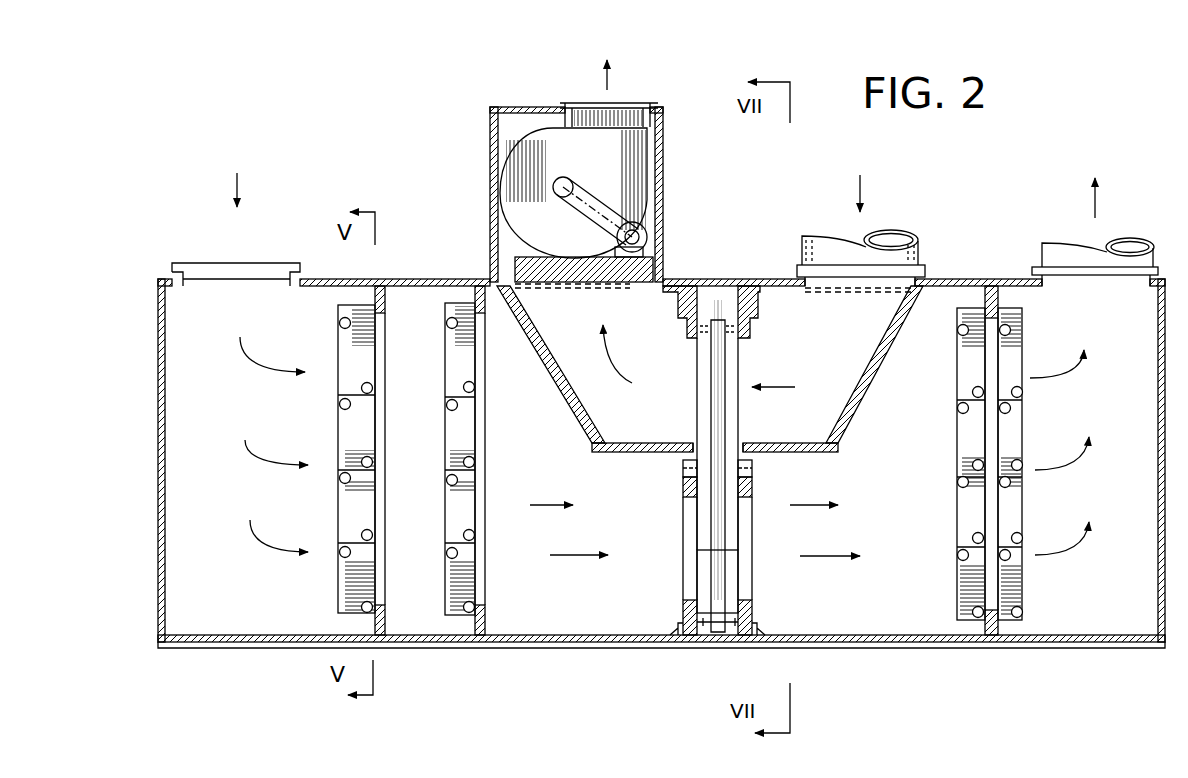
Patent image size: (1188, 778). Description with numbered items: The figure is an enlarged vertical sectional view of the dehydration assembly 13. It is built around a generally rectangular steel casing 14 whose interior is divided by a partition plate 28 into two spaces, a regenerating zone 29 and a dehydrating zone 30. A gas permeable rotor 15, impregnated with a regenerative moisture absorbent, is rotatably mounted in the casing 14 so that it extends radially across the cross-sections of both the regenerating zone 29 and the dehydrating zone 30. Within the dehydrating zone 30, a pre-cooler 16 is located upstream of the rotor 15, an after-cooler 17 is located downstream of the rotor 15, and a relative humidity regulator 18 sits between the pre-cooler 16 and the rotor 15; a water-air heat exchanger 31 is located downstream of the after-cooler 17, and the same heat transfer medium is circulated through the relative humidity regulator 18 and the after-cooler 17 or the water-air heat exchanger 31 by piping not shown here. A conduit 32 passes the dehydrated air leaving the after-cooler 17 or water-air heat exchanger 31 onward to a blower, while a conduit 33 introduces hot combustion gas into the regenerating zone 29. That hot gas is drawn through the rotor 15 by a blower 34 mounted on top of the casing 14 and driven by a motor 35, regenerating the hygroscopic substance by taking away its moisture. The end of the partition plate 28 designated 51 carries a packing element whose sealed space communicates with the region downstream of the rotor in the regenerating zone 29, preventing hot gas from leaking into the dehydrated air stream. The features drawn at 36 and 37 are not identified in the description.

The dehydration assembly 13 is at (708, 270).
The casing 14 is at (830, 649).
The gas permeable rotor 15 is at (697, 413).
The pre-cooler 16 is at (345, 497).
The after-cooler 17 is at (968, 508).
The relative humidity regulator 18 is at (468, 508).
The partition plate 28 is at (569, 405).
The regenerating zone 29 is at (802, 366).
The dehydrating zone 30 is at (800, 556).
The water-air heat exchanger 31 is at (1012, 505).
The conduit 32 is at (1118, 280).
The conduit 33 is at (877, 280).
The blower 34 is at (625, 160).
The motor 35 is at (632, 237).
The blower outlet 36 is at (590, 110).
The inlet opening 37 is at (265, 272).
The end of the partition plate 51 is at (743, 443).